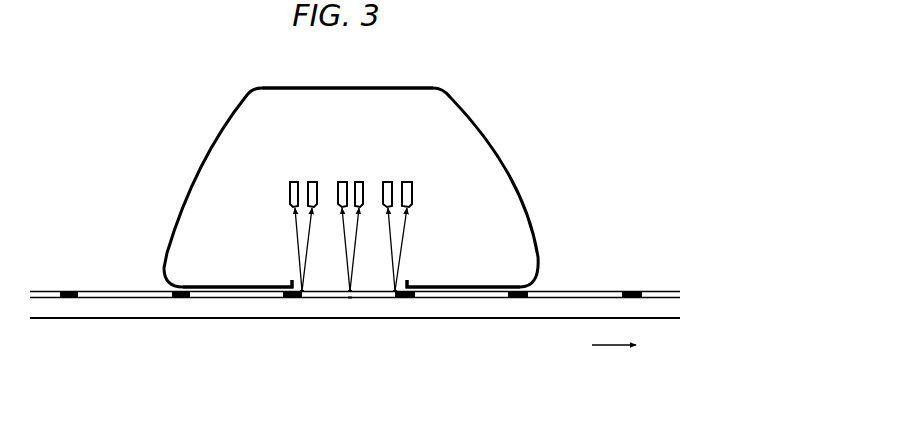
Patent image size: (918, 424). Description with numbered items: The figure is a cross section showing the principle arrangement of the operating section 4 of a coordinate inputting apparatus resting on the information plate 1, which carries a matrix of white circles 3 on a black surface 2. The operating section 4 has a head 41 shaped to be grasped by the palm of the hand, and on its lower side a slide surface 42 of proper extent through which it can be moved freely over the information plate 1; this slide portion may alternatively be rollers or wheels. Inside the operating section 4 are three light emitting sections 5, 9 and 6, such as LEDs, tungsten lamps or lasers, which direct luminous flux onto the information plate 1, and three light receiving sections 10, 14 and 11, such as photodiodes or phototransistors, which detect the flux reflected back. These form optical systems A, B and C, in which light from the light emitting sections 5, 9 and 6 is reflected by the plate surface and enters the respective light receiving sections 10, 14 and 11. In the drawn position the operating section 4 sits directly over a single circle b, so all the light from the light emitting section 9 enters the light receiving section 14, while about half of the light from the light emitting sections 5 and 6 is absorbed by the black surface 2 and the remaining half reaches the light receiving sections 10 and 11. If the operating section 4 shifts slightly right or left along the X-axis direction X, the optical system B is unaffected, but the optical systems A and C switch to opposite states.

The information plate 1 is at (659, 308).
The black surface 2 is at (632, 291).
The white circles 3 is at (590, 290).
The operating section 4 is at (493, 143).
The head 41 is at (373, 86).
The slide surface 42 is at (238, 288).
The light emitting section 5 is at (293, 180).
The light emitting section 6 is at (407, 180).
The light emitting section 9 is at (341, 180).
The light receiving section 10 is at (313, 180).
The light receiving section 11 is at (388, 180).
The light receiving section 14 is at (358, 180).
The optical system A is at (298, 239).
The optical system B is at (346, 240).
The optical system C is at (392, 240).
The single circle b is at (367, 298).
The X-axis direction X is at (625, 346).